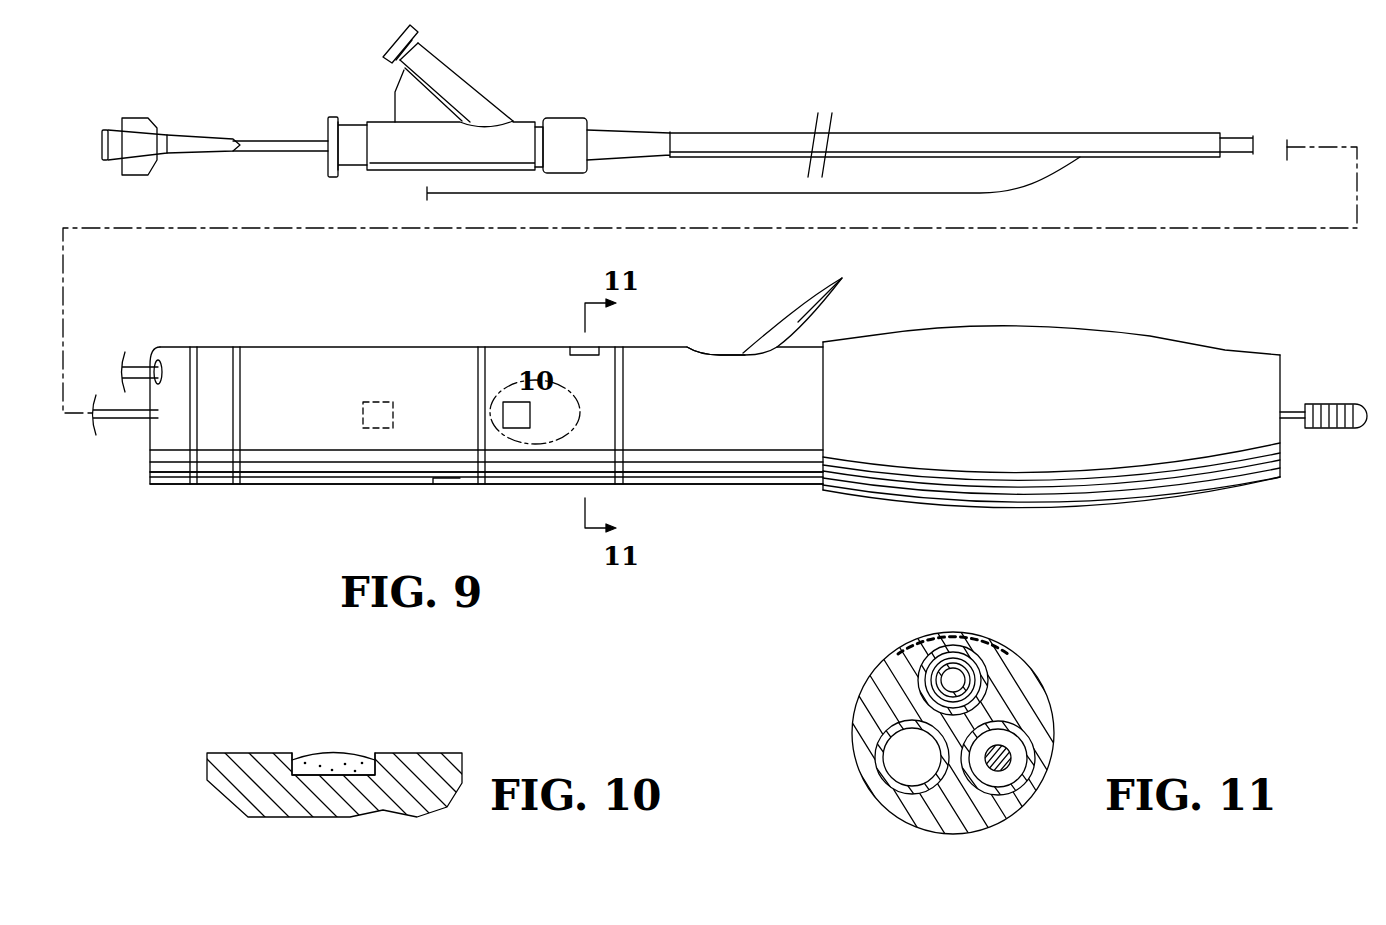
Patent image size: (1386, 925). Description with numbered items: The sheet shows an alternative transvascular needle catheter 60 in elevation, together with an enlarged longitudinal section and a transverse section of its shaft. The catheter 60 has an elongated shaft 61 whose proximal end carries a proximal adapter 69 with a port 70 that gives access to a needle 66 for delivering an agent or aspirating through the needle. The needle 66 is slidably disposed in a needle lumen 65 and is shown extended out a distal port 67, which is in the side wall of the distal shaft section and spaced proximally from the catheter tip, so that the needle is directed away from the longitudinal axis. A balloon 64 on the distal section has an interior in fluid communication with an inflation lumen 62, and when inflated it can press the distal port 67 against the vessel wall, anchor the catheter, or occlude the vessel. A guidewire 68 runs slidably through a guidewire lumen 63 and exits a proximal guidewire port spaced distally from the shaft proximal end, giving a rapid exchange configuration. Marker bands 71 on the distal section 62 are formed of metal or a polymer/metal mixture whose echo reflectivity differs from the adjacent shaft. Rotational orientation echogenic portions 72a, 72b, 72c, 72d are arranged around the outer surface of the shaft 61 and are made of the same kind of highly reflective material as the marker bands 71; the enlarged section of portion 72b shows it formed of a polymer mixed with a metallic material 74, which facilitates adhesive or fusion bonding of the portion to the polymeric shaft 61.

In FIG. 9, the needle catheter 60 is at (1115, 82).
In FIG. 10, the elongated shaft 61 is at (240, 756).
In FIG. 11, the elongated shaft 61 is at (862, 715).
In FIG. 9, the inflation lumen 62 is at (360, 485).
In FIG. 11, the inflation lumen 62 is at (893, 764).
In FIG. 11, the guidewire lumen 63 is at (1015, 748).
In FIG. 9, the balloon 64 is at (1105, 330).
In FIG. 9, the needle lumen 65 is at (674, 442).
In FIG. 11, the needle lumen 65 is at (976, 677).
In FIG. 9, the needle 66 is at (803, 322).
In FIG. 11, the needle 66 is at (917, 688).
In FIG. 9, the distal port 67 is at (726, 353).
In FIG. 11, the guidewire 68 is at (1005, 770).
In FIG. 9, the proximal adapter 69 is at (530, 121).
In FIG. 9, the port 70 is at (105, 128).
In FIG. 9, the marker bands 71 is at (200, 485).
In FIG. 9, the rotational orientation echogenic portion 72a is at (576, 347).
In FIG. 11, the rotational orientation echogenic portion 72a is at (975, 634).
In FIG. 9, the rotational orientation echogenic portion 72b is at (522, 429).
In FIG. 10, the rotational orientation echogenic portion 72b is at (358, 757).
In FIG. 9, the rotational orientation echogenic portion 72c is at (442, 485).
In FIG. 9, the rotational orientation echogenic portion 72d is at (378, 401).
In FIG. 10, the metallic material 74 is at (320, 755).